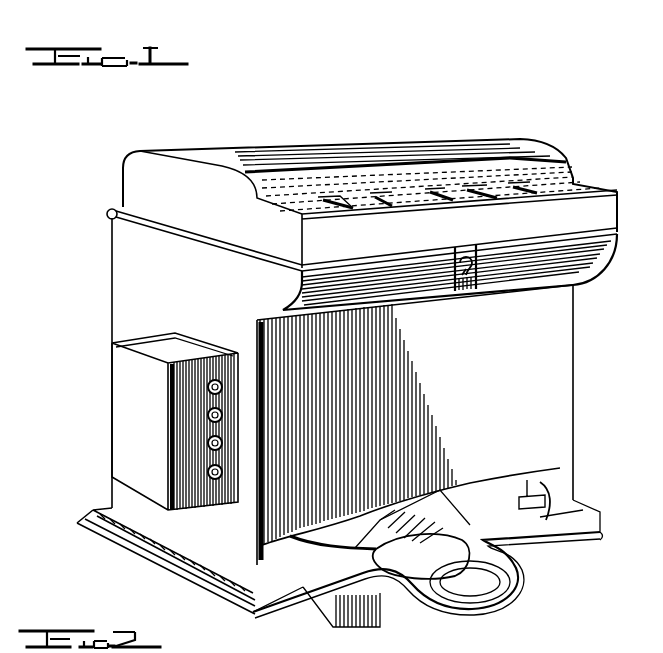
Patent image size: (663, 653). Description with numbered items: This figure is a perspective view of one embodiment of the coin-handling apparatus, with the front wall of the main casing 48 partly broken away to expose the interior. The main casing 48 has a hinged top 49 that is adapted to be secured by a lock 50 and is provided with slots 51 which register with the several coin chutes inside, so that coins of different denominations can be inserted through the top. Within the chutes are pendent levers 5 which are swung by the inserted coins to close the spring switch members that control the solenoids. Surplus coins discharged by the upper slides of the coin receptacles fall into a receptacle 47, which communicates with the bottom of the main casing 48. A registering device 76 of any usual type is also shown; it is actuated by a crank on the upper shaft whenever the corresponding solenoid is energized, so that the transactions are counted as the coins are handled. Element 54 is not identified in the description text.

The receptacle 47 is at (397, 610).
The main casing 48 is at (121, 267).
The hinged top 49 is at (243, 158).
The lock 50 is at (485, 291).
The slots 51 is at (390, 200).
The cloth 54 is at (490, 490).
The pendent levers 5 is at (537, 484).
The registering device 76 is at (194, 348).